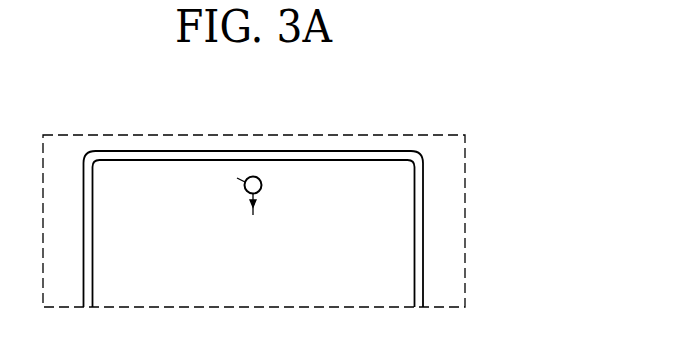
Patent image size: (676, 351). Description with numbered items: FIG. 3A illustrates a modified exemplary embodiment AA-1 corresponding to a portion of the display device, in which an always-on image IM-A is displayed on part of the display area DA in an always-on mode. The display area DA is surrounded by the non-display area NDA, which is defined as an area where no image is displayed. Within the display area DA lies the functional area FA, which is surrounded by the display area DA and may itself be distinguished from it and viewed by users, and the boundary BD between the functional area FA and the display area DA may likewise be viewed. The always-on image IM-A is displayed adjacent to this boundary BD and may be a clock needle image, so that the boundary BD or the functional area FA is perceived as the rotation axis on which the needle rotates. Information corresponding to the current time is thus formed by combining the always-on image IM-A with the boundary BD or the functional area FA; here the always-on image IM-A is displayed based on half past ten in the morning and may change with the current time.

The modified AA portion AA-1 is at (422, 135).
The functional area FA is at (250, 176).
The boundary BD is at (261, 178).
The always-on image IM-A is at (257, 203).
The display area DA is at (407, 261).
The non-display area NDA is at (422, 287).